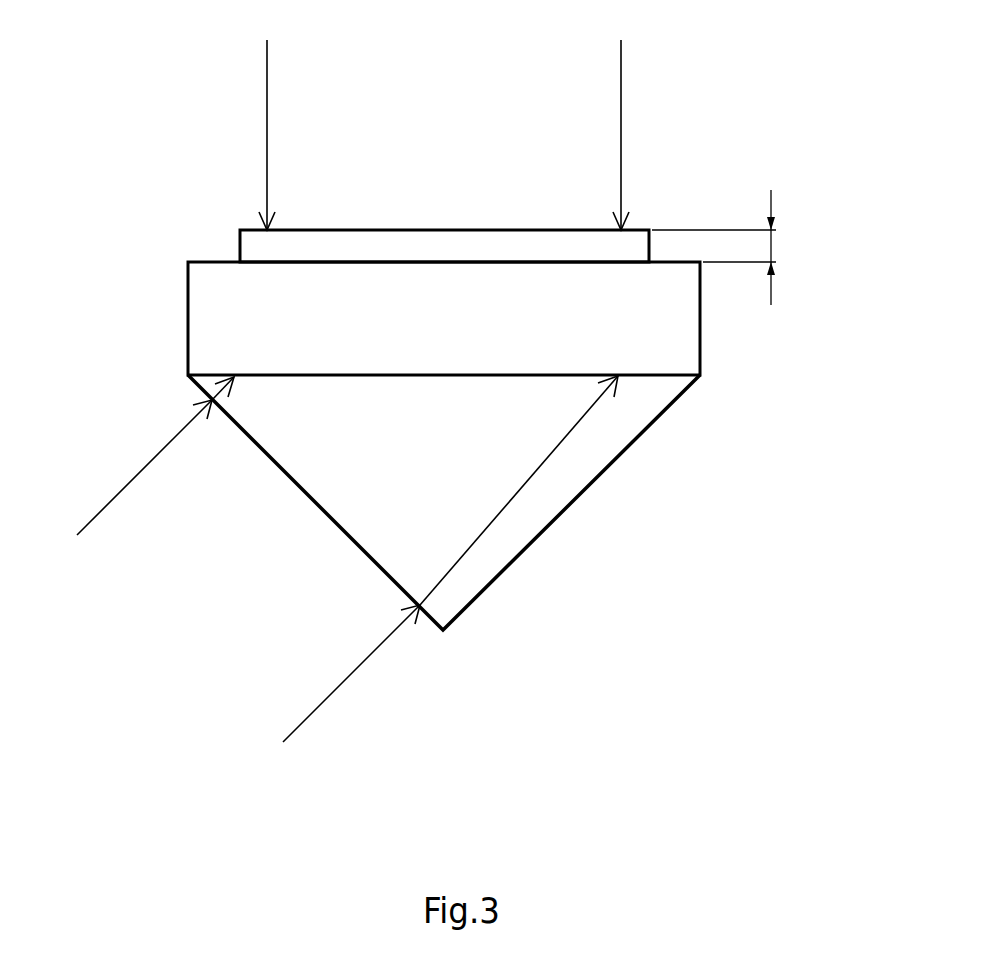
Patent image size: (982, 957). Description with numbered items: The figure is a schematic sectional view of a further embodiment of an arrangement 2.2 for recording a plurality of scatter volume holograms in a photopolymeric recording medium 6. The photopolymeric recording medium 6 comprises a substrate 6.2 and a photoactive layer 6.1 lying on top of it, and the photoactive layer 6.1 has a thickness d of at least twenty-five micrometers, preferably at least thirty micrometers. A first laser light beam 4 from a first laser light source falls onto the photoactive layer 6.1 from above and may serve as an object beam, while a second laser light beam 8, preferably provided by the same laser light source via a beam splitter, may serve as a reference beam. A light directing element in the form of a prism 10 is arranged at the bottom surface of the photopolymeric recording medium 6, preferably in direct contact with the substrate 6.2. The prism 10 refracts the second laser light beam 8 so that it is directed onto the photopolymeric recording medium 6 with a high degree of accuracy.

The arrangement 2.2 is at (740, 125).
The first laser light beam 4 is at (267, 92).
The photopolymeric recording medium 6 is at (103, 200).
The photoactive layer 6.1 is at (240, 243).
The substrate 6.2 is at (188, 330).
The second laser light beam 8 is at (355, 670).
The prism 10 is at (585, 490).
The thickness d is at (724, 247).